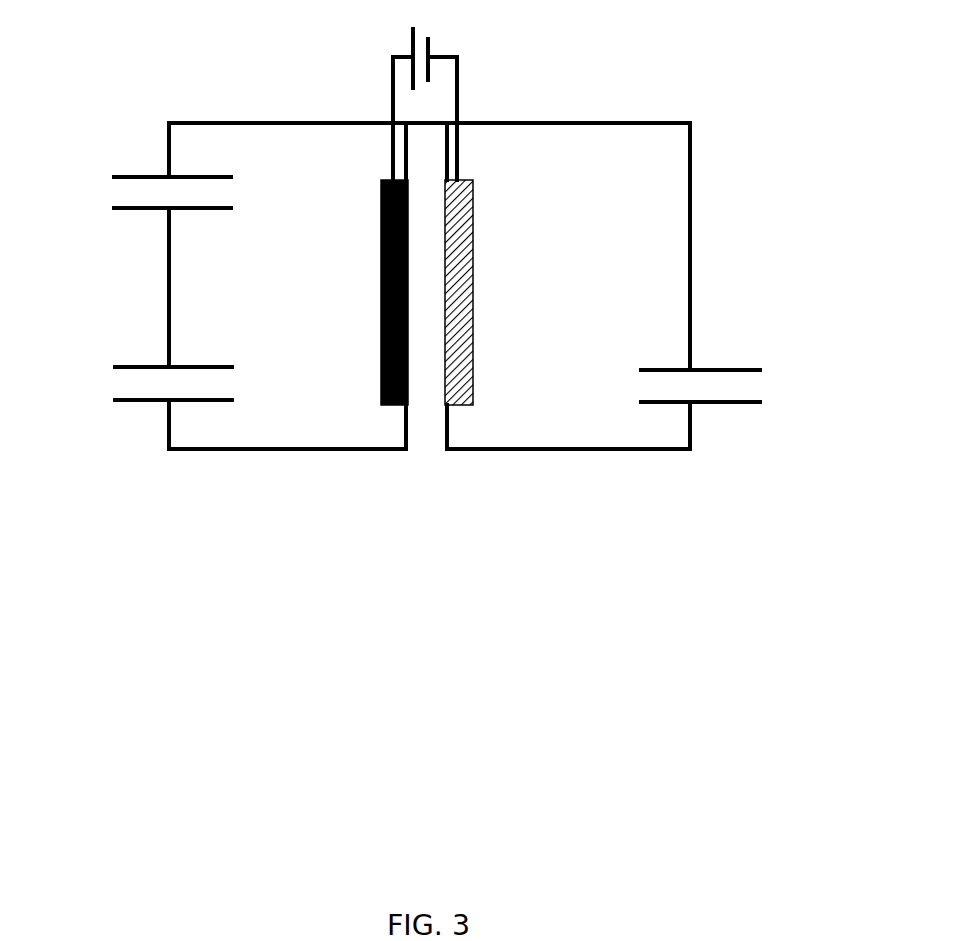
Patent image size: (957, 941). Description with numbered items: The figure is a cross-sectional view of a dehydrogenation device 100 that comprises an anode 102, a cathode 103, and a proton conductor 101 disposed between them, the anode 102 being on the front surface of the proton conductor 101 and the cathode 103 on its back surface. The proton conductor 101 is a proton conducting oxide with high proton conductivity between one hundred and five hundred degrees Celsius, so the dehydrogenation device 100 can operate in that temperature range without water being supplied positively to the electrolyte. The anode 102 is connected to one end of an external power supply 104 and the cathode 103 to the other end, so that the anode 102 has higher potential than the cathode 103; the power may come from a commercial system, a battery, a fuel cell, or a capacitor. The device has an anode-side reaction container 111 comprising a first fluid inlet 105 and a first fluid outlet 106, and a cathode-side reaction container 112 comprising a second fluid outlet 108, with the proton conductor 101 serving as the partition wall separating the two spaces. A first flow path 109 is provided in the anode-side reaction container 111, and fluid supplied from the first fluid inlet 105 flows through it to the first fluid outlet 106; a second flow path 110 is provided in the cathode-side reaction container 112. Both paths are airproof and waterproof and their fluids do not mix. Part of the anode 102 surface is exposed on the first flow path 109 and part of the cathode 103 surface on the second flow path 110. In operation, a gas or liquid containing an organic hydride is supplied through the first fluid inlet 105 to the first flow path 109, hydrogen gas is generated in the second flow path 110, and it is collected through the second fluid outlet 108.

The dehydrogenation device 100 is at (572, 95).
The proton conductor 101 is at (420, 443).
The anode 102 is at (380, 218).
The cathode 103 is at (472, 192).
The external power supply 104 is at (408, 43).
The first fluid inlet 105 is at (143, 201).
The first fluid outlet 106 is at (145, 393).
The second fluid outlet 108 is at (722, 395).
The first flow path 109 is at (205, 282).
The second flow path 110 is at (650, 298).
The anode-side reaction container 111 is at (277, 450).
The cathode-side reaction container 112 is at (568, 450).